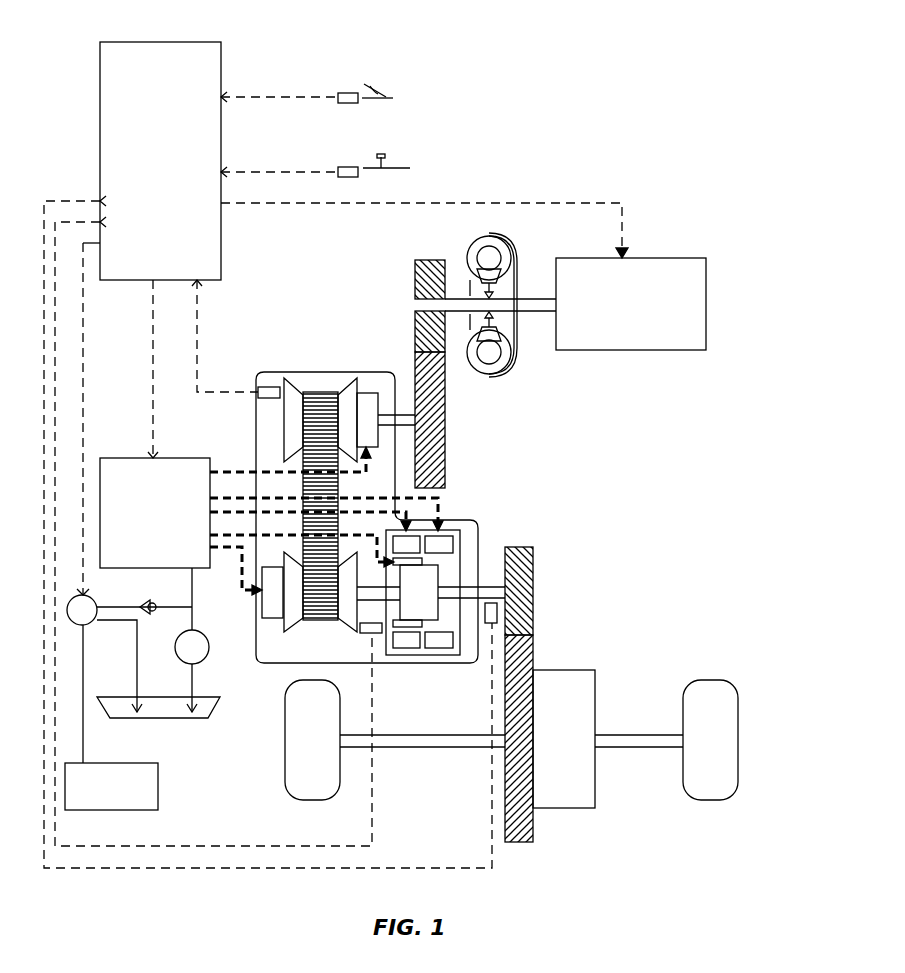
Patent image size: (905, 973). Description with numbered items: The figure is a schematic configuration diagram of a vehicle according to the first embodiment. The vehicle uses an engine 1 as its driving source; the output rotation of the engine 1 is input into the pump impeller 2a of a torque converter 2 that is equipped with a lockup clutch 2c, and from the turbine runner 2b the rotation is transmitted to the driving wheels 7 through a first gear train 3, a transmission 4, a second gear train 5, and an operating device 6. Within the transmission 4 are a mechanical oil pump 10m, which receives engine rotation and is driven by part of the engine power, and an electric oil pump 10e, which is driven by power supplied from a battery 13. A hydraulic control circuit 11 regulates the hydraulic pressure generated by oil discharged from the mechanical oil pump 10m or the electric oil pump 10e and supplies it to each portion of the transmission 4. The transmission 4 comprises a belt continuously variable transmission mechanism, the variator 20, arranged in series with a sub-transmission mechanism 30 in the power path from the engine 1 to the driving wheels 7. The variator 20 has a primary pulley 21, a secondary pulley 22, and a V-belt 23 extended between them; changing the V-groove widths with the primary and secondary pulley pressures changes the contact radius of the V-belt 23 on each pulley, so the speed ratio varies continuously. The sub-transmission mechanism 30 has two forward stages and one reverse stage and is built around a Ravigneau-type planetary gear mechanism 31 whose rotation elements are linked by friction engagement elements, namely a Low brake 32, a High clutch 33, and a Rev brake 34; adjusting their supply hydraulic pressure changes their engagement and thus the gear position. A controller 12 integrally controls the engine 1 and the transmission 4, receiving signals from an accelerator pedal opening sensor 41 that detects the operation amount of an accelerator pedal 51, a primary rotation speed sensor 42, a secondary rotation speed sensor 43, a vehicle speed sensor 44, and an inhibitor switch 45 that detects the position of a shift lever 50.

The engine 1 is at (684, 270).
The torque converter 2 is at (506, 289).
The pump impeller 2a is at (473, 258).
The turbine runner 2b is at (492, 378).
The lockup clutch 2c is at (515, 330).
The first gear train 3 is at (423, 254).
The transmission 4 is at (388, 372).
The second gear train 5 is at (521, 850).
The operating device 6 is at (565, 800).
The driving wheels 7 is at (312, 790).
The electric oil pump 10e is at (93, 622).
The mechanical oil pump 10m is at (188, 660).
The hydraulic control circuit 11 is at (115, 460).
The controller 12 is at (206, 50).
The battery 13 is at (160, 800).
The variator 20 is at (335, 514).
The primary pulley 21 is at (276, 416).
The secondary pulley 22 is at (316, 629).
The V-belt 23 is at (303, 383).
The sub-transmission mechanism 30 is at (466, 571).
The Ravigneau-type planetary gear mechanism 31 is at (425, 590).
The Low brake 32 is at (410, 546).
The High clutch 33 is at (410, 624).
The Rev brake 34 is at (438, 546).
The accelerator pedal opening sensor 41 is at (348, 103).
The primary rotation speed sensor 42 is at (268, 386).
The secondary rotation speed sensor 43 is at (368, 634).
The vehicle speed sensor 44 is at (491, 602).
The inhibitor switch 45 is at (356, 166).
The shift lever 50 is at (385, 156).
The accelerator pedal 51 is at (373, 90).